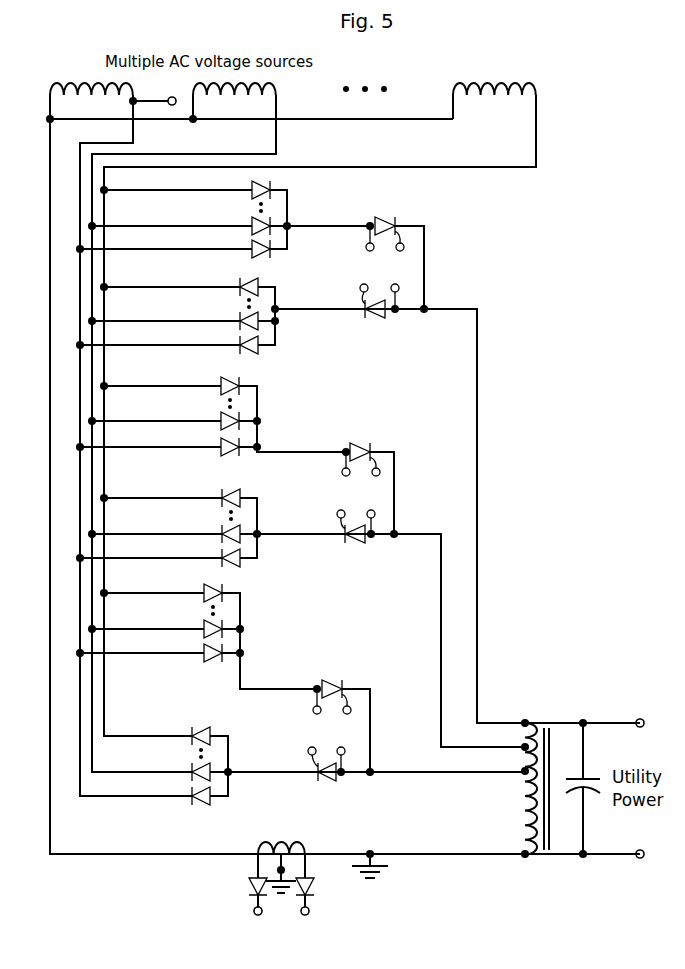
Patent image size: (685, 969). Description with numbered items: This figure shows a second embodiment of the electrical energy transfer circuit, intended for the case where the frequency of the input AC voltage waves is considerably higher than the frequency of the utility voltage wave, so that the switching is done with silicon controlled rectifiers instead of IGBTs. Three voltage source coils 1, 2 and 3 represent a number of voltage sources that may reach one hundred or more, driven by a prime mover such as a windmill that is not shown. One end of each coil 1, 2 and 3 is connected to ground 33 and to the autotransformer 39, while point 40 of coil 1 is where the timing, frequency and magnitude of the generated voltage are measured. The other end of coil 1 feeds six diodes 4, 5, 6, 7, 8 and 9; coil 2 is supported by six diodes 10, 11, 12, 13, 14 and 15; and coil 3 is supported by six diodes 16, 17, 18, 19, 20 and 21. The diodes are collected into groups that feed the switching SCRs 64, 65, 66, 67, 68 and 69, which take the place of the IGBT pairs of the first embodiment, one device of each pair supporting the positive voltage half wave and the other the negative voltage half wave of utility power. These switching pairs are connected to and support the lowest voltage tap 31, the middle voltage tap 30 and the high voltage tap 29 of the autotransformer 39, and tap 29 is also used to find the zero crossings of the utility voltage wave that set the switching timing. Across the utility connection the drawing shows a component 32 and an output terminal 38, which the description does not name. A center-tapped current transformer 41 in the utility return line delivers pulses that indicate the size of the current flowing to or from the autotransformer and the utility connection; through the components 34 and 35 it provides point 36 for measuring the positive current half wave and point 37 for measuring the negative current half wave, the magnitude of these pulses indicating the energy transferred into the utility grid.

The voltage source coil 1 is at (100, 94).
The voltage source coil 2 is at (241, 94).
The voltage source coil 3 is at (502, 96).
The diode 4 is at (189, 801).
The diode 5 is at (204, 658).
The diode 6 is at (222, 562).
The diode 7 is at (221, 452).
The diode 8 is at (240, 350).
The diode 9 is at (252, 254).
The diode 10 is at (189, 767).
The diode 11 is at (205, 625).
The diode 12 is at (222, 533).
The diode 13 is at (222, 418).
The diode 14 is at (241, 320).
The diode 15 is at (253, 223).
The diode 16 is at (189, 731).
The diode 17 is at (205, 589).
The diode 18 is at (222, 497).
The diode 19 is at (222, 382).
The diode 20 is at (241, 285).
The diode 21 is at (253, 186).
The high voltage tap 29 is at (521, 722).
The middle voltage tap 30 is at (521, 746).
The lowest voltage tap 31 is at (521, 770).
The capacitor 32 is at (587, 779).
The ground 33 is at (388, 869).
The diode 34 is at (250, 888).
The diode 35 is at (314, 888).
The current transformer point 36 is at (257, 919).
The current transformer point 37 is at (304, 919).
The output terminal 38 is at (643, 726).
The autotransformer 39 is at (551, 815).
The coil point 40 is at (172, 97).
The current transformer 41 is at (277, 849).
The thyristor switch 64 is at (323, 777).
The thyristor switch 65 is at (336, 679).
The thyristor switch 66 is at (350, 545).
The thyristor switch 67 is at (365, 443).
The thyristor switch 68 is at (376, 316).
The thyristor switch 69 is at (386, 217).